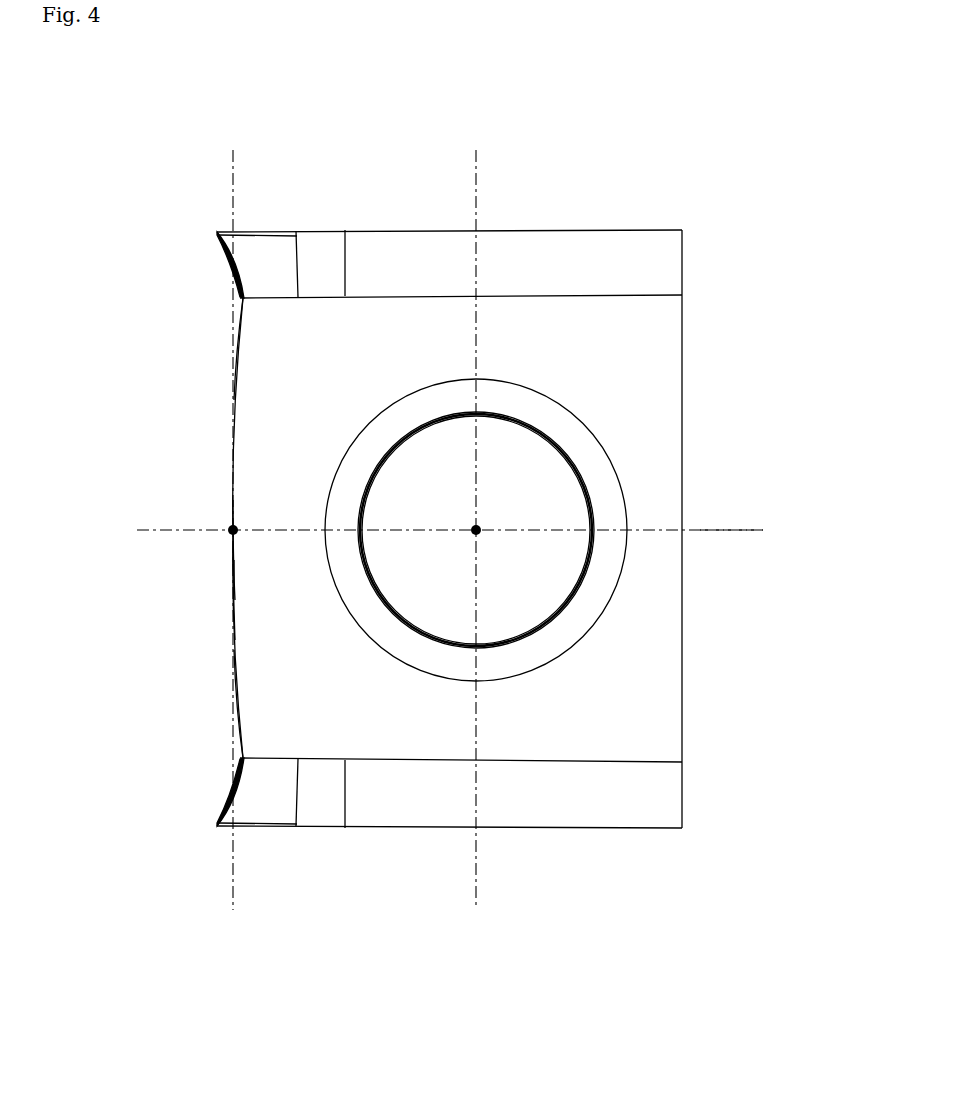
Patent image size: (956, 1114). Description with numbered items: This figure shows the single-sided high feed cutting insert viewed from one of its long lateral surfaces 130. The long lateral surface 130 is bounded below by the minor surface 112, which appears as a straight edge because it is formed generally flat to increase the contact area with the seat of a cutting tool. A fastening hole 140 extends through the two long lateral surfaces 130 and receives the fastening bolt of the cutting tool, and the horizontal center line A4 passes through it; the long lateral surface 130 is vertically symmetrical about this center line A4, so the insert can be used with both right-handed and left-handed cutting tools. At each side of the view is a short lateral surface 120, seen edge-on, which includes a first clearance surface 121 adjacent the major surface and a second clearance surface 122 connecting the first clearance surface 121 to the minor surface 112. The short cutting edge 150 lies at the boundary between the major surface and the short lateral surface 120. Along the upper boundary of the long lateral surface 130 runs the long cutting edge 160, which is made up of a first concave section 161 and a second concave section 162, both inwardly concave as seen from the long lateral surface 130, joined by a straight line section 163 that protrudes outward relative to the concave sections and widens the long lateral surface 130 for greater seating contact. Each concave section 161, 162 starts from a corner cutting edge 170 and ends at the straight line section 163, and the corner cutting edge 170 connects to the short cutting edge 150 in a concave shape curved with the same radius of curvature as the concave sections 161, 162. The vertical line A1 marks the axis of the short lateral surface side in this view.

The minor surface 112 is at (684, 620).
The short lateral surface 120 is at (563, 231).
The first clearance surface 121 is at (240, 233).
The second clearance surface 122 is at (418, 230).
The long lateral surface 130 is at (643, 684).
The fastening hole 140 is at (515, 472).
The short cutting edge 150 is at (217, 232).
The long cutting edge 160 is at (233, 616).
The first concave section 161 is at (240, 750).
The second concave section 162 is at (237, 302).
The straight line section 163 is at (233, 580).
The corner cutting edge 170 is at (235, 262).
The axis A1 is at (230, 528).
The center line A4 is at (745, 530).